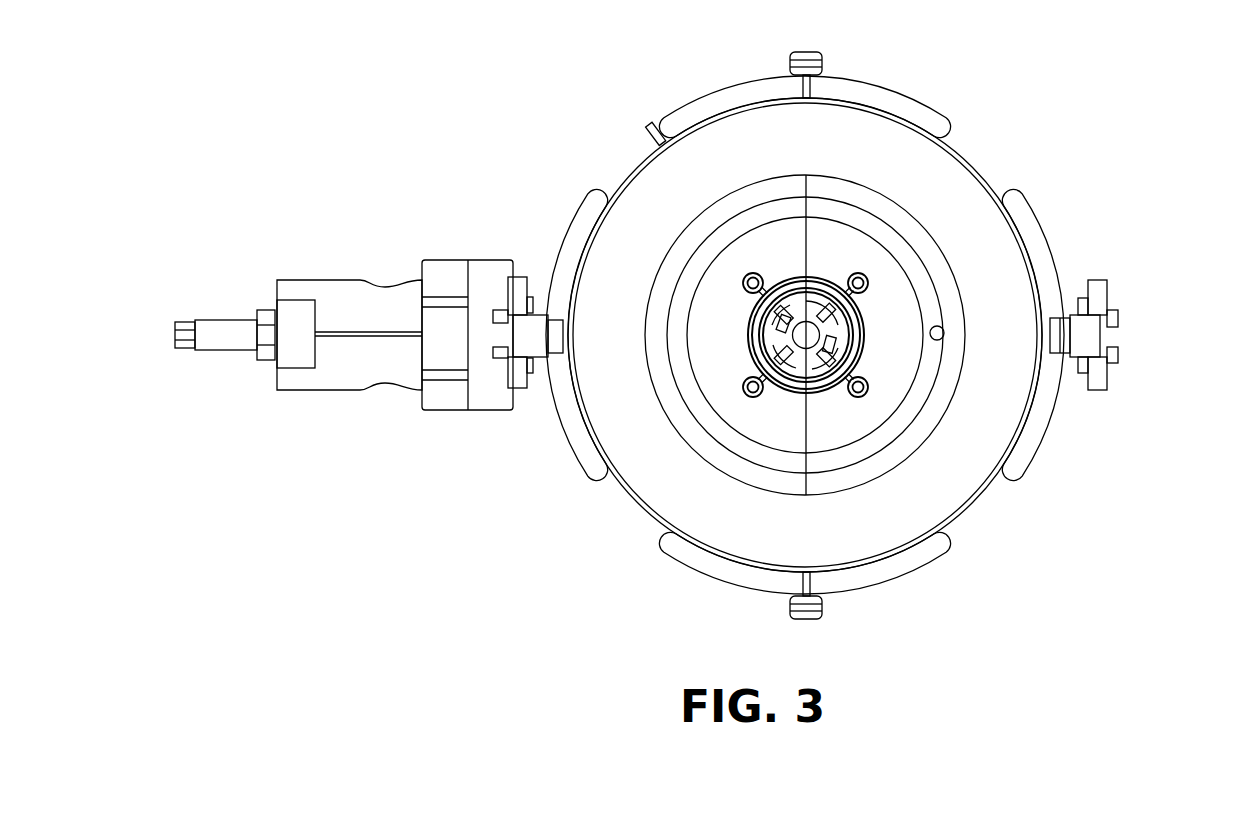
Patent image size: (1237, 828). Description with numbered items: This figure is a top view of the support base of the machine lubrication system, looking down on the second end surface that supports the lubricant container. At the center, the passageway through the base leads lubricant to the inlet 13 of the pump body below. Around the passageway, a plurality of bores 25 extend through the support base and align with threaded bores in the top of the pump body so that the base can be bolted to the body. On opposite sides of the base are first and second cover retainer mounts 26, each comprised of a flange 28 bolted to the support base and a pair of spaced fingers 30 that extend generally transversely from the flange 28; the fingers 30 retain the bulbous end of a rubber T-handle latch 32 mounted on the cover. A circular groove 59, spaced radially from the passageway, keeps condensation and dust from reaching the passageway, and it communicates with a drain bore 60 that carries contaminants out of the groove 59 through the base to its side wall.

The inlet 13 is at (808, 338).
The bores 25 is at (763, 273).
The cover retainer mount 26 is at (580, 232).
The flange 28 is at (580, 437).
The spaced fingers 30 is at (497, 320).
The T-handle latch 32 is at (508, 358).
The circular groove 59 is at (903, 247).
The drain bore 60 is at (940, 326).